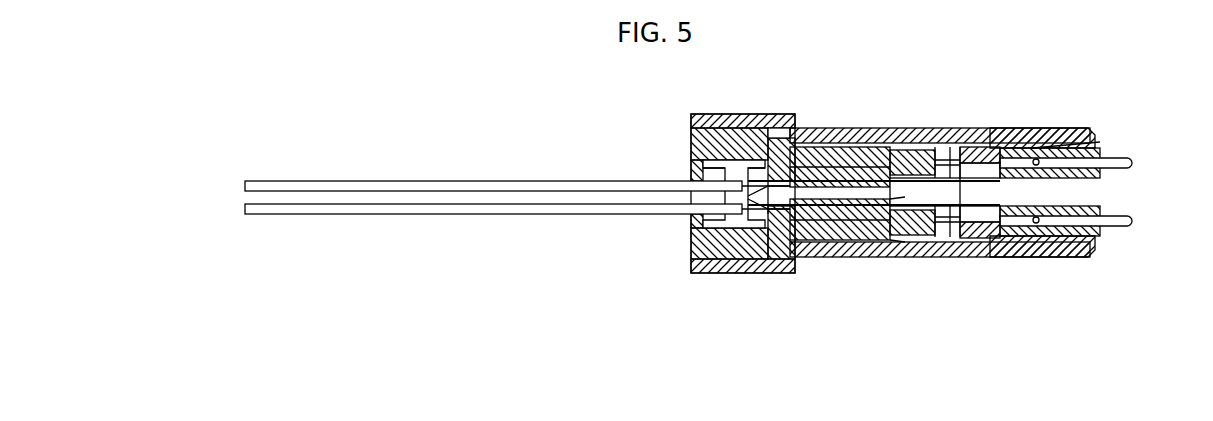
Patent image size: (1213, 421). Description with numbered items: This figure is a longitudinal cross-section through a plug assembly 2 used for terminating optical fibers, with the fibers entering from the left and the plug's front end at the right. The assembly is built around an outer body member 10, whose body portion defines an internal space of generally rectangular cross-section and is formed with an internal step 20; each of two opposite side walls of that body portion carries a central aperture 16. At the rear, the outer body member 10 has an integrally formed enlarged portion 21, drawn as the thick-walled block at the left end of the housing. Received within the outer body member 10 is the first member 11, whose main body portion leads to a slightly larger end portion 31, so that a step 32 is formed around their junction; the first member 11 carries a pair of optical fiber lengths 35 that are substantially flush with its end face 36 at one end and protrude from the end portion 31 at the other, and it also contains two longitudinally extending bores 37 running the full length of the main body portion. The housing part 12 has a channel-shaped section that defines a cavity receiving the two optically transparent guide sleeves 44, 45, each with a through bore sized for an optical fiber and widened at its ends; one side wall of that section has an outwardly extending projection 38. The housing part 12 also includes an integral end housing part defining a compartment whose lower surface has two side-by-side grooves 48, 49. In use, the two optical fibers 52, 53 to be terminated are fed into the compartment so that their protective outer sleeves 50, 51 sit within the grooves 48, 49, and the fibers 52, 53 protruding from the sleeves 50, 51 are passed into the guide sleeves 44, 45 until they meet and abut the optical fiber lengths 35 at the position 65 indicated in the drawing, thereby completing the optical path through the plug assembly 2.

The plug assembly 2 is at (1000, 68).
The outer body member 10 is at (836, 274).
The first member 11 is at (938, 262).
The housing part 12 is at (815, 153).
The aperture 16 is at (905, 128).
The step 20 is at (993, 128).
The enlarged portion 21 is at (745, 114).
The end portion 31 is at (973, 243).
The step 32 is at (1003, 243).
The optical fiber lengths 35 is at (1062, 152).
The end face 36 is at (1103, 205).
The bores 37 is at (1040, 158).
The projection 38 is at (893, 262).
The guide sleeve 44 is at (850, 173).
The guide sleeve 45 is at (768, 265).
The groove 48 is at (693, 220).
The groove 49 is at (695, 167).
The protective outer sleeve 50 is at (530, 214).
The protective outer sleeve 51 is at (540, 180).
The optical fiber 52 is at (733, 268).
The optical fiber 53 is at (765, 182).
The position 65 is at (887, 160).